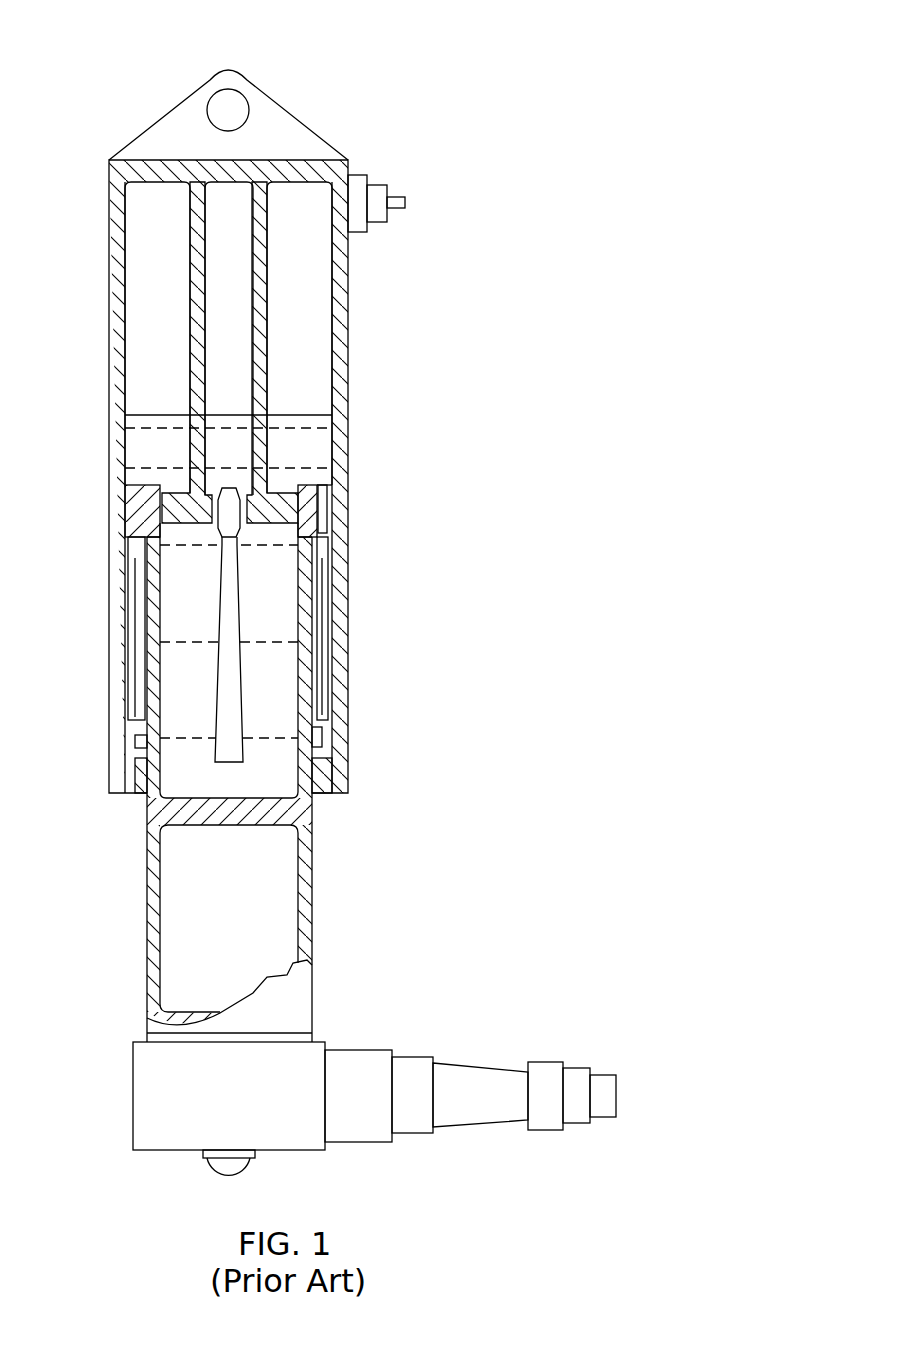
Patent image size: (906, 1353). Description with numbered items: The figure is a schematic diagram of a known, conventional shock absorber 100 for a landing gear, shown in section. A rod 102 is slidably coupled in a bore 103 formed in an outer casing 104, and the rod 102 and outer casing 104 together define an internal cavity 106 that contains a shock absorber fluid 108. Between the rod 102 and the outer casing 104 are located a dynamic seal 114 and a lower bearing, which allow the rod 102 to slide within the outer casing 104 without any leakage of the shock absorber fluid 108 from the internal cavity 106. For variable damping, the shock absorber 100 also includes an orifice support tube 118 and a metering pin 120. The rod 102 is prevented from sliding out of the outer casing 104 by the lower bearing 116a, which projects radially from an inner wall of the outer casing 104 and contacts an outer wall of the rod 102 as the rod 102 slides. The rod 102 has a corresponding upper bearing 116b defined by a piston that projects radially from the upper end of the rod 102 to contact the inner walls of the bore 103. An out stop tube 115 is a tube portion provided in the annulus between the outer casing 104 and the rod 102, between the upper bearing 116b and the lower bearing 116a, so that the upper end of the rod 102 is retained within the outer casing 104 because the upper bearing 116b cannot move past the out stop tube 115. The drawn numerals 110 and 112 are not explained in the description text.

The shock absorber 100 is at (128, 82).
The rod 102 is at (312, 855).
The bore 103 is at (130, 333).
The outer casing 104 is at (109, 380).
The internal cavity 106 is at (280, 580).
The shock absorber fluid 108 is at (314, 414).
The inner cylinder 110 is at (283, 675).
The upper chamber 112 is at (310, 250).
The dynamic seal 114 is at (132, 735).
The out stop tube 115 is at (135, 592).
The lower bearing 116a is at (130, 775).
The upper bearing 116b is at (135, 508).
The orifice support tube 118 is at (190, 270).
The metering pin 120 is at (226, 664).